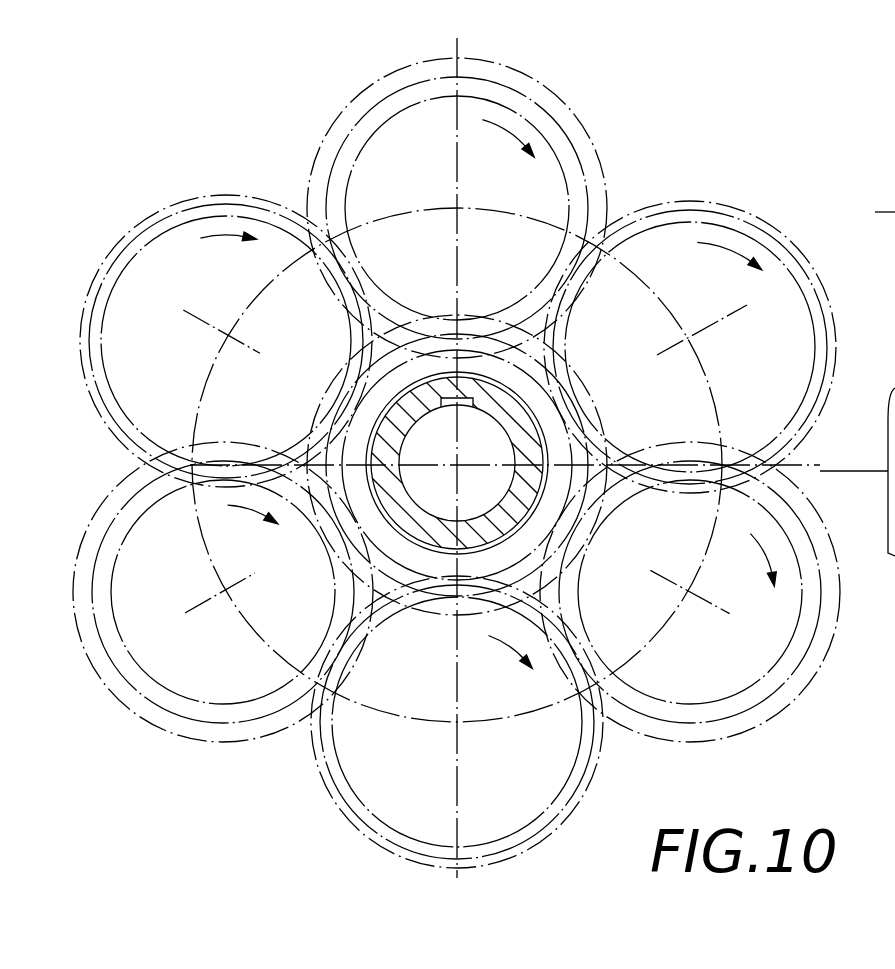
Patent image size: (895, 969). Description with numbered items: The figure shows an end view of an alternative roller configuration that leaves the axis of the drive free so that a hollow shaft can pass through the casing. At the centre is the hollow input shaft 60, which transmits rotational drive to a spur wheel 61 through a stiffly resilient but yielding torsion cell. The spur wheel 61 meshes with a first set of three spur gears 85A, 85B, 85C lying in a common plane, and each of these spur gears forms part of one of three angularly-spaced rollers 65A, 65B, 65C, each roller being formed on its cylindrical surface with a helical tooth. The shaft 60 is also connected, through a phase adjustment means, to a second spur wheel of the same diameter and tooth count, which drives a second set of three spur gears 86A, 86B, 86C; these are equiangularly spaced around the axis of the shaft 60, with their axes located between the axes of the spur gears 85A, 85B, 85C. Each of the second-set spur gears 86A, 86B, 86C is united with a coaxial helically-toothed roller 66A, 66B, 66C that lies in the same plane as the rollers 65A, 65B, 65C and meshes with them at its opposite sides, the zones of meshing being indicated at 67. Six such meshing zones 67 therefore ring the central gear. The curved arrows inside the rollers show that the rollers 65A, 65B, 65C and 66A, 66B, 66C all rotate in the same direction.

The hollow input shaft 60 is at (503, 407).
The spur wheel 61 is at (553, 432).
The helically-toothed roller 65A is at (135, 690).
The helically-toothed roller 65B is at (528, 87).
The helically-toothed roller 65C is at (800, 672).
The helically-toothed roller 66A is at (108, 258).
The helically-toothed roller 66B is at (767, 233).
The helically-toothed roller 66C is at (546, 822).
The spur gear 85A is at (208, 690).
The spur gear 85B is at (548, 158).
The spur gear 85C is at (740, 680).
The spur gear 86A is at (145, 262).
The spur gear 86B is at (797, 343).
The spur gear 86C is at (395, 807).
The zone of meshing 67 is at (291, 196).